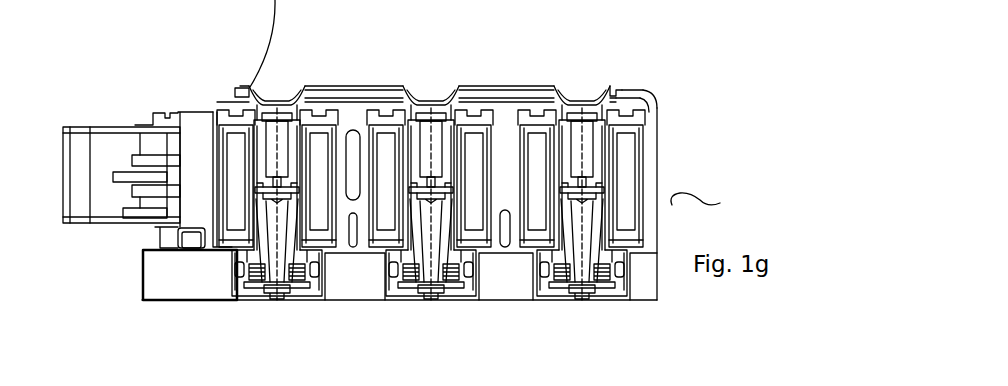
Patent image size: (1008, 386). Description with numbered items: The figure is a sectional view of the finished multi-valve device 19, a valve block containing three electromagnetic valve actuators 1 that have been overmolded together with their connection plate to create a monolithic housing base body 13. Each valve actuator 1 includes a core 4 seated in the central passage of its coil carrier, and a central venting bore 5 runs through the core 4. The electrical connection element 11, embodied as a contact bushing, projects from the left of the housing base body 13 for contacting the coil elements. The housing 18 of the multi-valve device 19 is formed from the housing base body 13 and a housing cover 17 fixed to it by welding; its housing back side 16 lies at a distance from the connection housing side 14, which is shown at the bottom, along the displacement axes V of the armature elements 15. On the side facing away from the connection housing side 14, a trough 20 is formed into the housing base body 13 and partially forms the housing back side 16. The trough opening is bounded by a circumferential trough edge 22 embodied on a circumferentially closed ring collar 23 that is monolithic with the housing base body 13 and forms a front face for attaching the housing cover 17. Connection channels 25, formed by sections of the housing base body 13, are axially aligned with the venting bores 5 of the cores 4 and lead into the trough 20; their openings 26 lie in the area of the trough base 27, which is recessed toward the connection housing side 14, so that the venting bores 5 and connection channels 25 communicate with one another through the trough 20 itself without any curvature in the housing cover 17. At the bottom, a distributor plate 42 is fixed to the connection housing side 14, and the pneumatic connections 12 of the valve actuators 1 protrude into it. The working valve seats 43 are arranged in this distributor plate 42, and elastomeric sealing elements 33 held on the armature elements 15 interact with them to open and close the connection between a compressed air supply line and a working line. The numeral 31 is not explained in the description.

The electromagnetic valve actuator 1 is at (315, 160).
The core 4 is at (275, 157).
The central venting bore 5 is at (265, 155).
The electrical connection element 11 is at (100, 143).
The pneumatic connection 12 is at (247, 280).
The housing base body 13 is at (196, 122).
The connection housing side 14 is at (333, 257).
The armature element 15 is at (252, 253).
The housing back side 16 is at (312, 84).
The housing cover 17 is at (583, 92).
The housing 18 is at (650, 110).
The multi-valve device 19 is at (723, 212).
The trough 20 is at (345, 100).
The trough edge 22 is at (613, 90).
The ring collar 23 is at (617, 96).
The connection channel 25 is at (250, 88).
The opening 26 is at (297, 106).
The trough base 27 is at (400, 100).
The valve axis 31 is at (436, 299).
The elastomeric sealing element 33 is at (282, 292).
The distributor plate 42 is at (162, 285).
The valve seat 43 is at (275, 296).